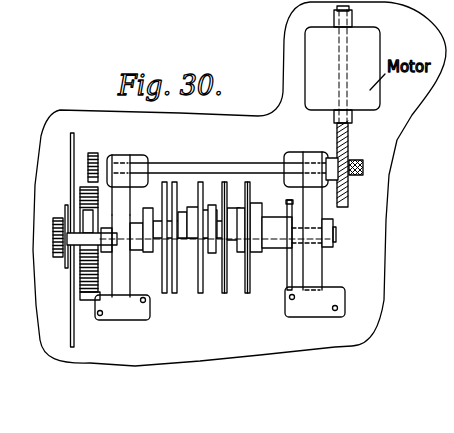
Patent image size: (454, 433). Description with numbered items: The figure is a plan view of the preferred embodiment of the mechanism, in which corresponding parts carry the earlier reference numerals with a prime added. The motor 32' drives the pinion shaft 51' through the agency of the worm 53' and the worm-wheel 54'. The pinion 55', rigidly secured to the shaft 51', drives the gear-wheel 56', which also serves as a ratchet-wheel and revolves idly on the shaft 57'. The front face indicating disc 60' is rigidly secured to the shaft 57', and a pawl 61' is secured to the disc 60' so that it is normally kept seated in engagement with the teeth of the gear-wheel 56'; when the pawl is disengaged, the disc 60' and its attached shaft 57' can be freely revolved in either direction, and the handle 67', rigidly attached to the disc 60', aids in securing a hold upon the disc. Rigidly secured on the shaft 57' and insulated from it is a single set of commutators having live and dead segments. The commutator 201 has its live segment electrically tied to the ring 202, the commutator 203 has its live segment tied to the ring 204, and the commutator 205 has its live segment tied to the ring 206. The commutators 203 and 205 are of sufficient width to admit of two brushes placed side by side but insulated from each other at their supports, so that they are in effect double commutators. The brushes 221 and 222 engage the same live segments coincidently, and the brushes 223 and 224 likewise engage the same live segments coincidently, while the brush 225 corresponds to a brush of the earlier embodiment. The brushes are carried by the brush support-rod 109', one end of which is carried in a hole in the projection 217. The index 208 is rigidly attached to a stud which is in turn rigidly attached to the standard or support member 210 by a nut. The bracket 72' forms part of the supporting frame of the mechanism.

The motor 32' is at (357, 64).
The pinion shaft 51' is at (228, 160).
The worm 53' is at (357, 162).
The worm-wheel 54' is at (359, 164).
The pinion 55' is at (99, 160).
The gear-wheel 56' is at (94, 263).
The shaft 57' is at (315, 244).
The front face indicating disc 60' is at (60, 240).
The pawl 61' is at (66, 216).
The handle 67' is at (77, 251).
The frame bracket 72' is at (319, 234).
The brush support-rod 109' is at (275, 218).
The commutator 201 is at (173, 292).
The ring 202 is at (147, 252).
The commutator 203 is at (186, 281).
The ring 204 is at (211, 254).
The commutator 205 is at (234, 278).
The ring 206 is at (253, 256).
The index 208 is at (65, 211).
The standard or support member 210 is at (129, 270).
The projection 217 is at (131, 212).
The brush 221 is at (180, 213).
The brush 222 is at (203, 211).
The brush 223 is at (230, 211).
The brush 224 is at (252, 209).
The brush 225 is at (171, 240).